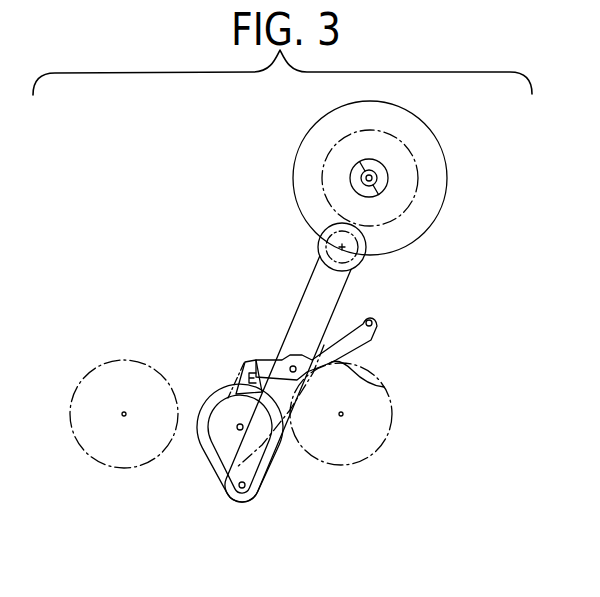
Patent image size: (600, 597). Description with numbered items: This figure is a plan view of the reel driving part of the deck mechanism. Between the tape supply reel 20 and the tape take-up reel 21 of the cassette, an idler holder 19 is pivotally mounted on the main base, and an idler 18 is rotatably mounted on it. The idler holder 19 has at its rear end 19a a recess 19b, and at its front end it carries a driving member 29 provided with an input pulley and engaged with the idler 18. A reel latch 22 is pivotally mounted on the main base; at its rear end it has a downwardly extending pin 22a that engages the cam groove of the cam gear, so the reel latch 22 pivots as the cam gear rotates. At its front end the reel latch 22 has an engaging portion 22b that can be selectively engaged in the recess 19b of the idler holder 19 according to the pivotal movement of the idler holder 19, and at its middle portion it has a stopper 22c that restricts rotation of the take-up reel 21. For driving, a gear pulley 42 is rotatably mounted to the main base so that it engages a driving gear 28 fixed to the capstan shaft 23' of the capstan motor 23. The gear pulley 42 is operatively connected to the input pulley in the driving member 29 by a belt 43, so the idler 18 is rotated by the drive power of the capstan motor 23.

The idler 18 is at (197, 434).
The idler holder 19 is at (225, 447).
The rear end 19a is at (243, 362).
The recess 19b is at (239, 373).
The tape supply reel 20 is at (113, 457).
The tape take-up reel 21 is at (358, 458).
The reel latch 22 is at (358, 343).
The downwardly extending pin 22a is at (373, 323).
The engaging portion 22b is at (272, 358).
The stopper 22c is at (385, 387).
The capstan motor 23 is at (396, 180).
The capstan shaft 23' is at (425, 148).
The driving gear 28 is at (413, 190).
The driving member 29 is at (236, 497).
The gear pulley 42 is at (320, 247).
The belt 43 is at (300, 307).